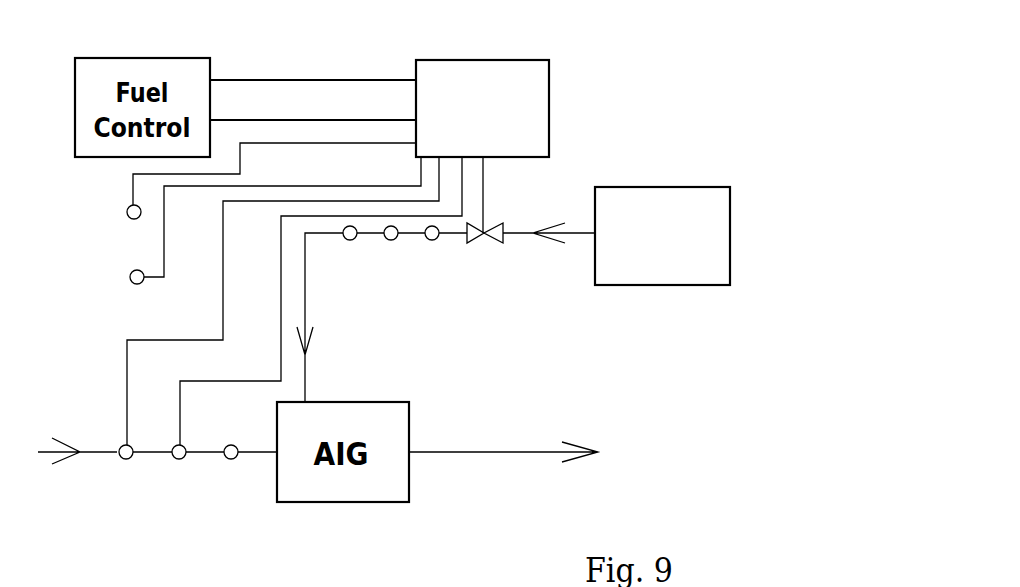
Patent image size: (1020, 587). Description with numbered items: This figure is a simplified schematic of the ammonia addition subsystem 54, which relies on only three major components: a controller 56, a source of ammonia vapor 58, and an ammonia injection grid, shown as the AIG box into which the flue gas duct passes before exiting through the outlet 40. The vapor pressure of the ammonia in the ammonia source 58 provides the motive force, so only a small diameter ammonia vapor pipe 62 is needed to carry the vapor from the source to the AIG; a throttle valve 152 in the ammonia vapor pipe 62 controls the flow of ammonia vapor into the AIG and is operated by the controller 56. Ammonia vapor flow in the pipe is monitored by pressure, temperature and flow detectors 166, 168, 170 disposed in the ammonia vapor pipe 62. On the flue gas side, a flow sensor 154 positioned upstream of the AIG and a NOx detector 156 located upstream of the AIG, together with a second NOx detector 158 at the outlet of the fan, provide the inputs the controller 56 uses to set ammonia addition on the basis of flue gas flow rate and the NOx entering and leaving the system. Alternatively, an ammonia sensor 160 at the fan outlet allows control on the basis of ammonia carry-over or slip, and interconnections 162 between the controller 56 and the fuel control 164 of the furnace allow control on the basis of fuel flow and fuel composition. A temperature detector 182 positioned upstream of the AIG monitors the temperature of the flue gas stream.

The flue gas outlet duct 40 is at (525, 455).
The ammonia addition subsystem 54 is at (668, 92).
The controller 56 is at (549, 62).
The source of ammonia vapor 58 is at (653, 290).
The ammonia vapor pipe 62 is at (310, 318).
The throttle valve 152 is at (500, 242).
The flow sensor 154 is at (165, 462).
The NOx detector 156 is at (117, 445).
The NOx detector 158 is at (130, 278).
The ammonia sensor 160 is at (127, 213).
The interconnections 162 is at (334, 80).
The fuel control 164 is at (210, 60).
The pressure detector 166 is at (350, 242).
The temperature detector 168 is at (393, 242).
The flow detector 170 is at (435, 242).
The temperature detector 182 is at (230, 462).